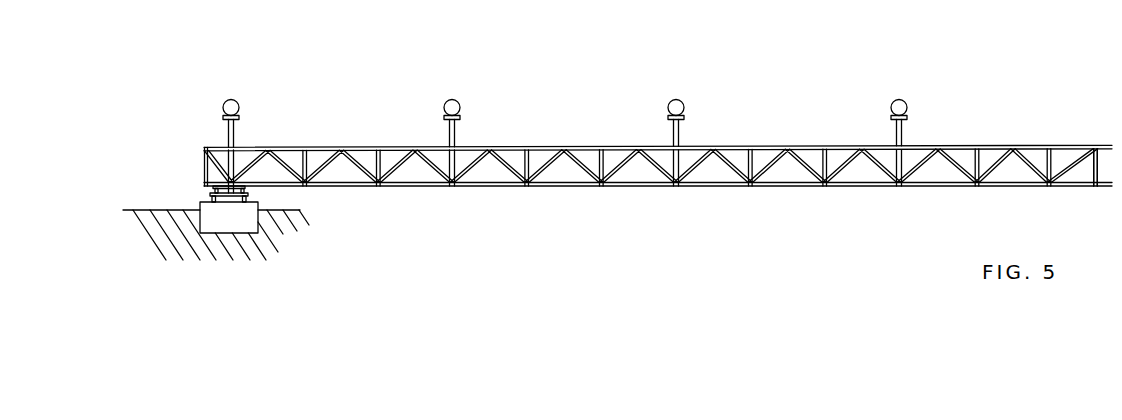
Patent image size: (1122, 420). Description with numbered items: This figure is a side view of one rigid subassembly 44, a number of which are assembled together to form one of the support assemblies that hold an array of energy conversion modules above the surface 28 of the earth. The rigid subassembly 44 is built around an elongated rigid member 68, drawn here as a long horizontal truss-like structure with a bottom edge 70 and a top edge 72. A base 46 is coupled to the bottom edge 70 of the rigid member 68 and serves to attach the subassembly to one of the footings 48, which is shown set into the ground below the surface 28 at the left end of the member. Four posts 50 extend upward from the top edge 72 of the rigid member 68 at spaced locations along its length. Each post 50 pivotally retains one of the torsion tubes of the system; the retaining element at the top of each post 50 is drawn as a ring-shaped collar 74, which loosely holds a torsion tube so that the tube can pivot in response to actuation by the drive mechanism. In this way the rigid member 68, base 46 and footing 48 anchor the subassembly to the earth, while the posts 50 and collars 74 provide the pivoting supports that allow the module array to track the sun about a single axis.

The surface of the earth 28 is at (185, 210).
The rigid subassembly 44 is at (755, 247).
The base 46 is at (247, 192).
The footing 48 is at (228, 230).
The post 50 is at (228, 128).
The elongated rigid member 68 is at (1097, 145).
The bottom edge 70 is at (477, 187).
The top edge 72 is at (501, 146).
The ring-shaped collar 74 is at (231, 100).